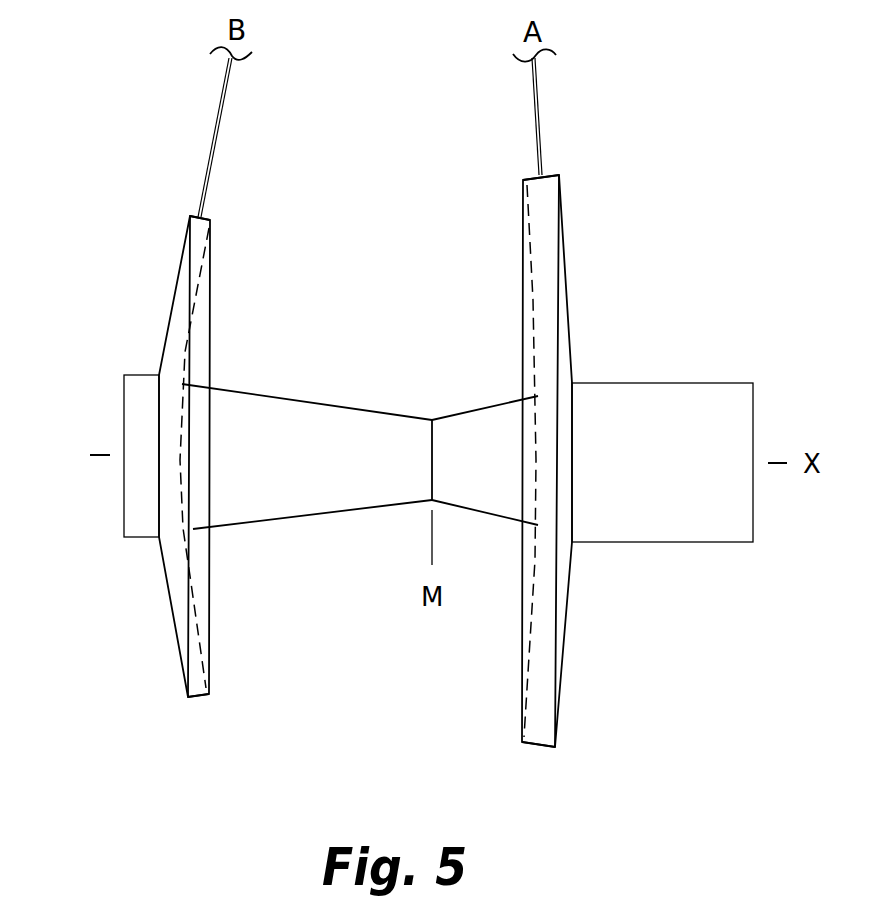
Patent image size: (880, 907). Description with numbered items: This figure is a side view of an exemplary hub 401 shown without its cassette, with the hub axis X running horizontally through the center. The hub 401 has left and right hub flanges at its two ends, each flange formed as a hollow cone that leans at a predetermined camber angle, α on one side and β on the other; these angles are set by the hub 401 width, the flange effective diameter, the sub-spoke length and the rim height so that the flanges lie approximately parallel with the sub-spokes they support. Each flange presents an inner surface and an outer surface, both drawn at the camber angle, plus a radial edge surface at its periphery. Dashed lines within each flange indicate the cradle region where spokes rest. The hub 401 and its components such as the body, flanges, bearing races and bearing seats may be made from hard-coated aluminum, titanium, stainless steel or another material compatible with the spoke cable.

The hub 401 is at (318, 513).